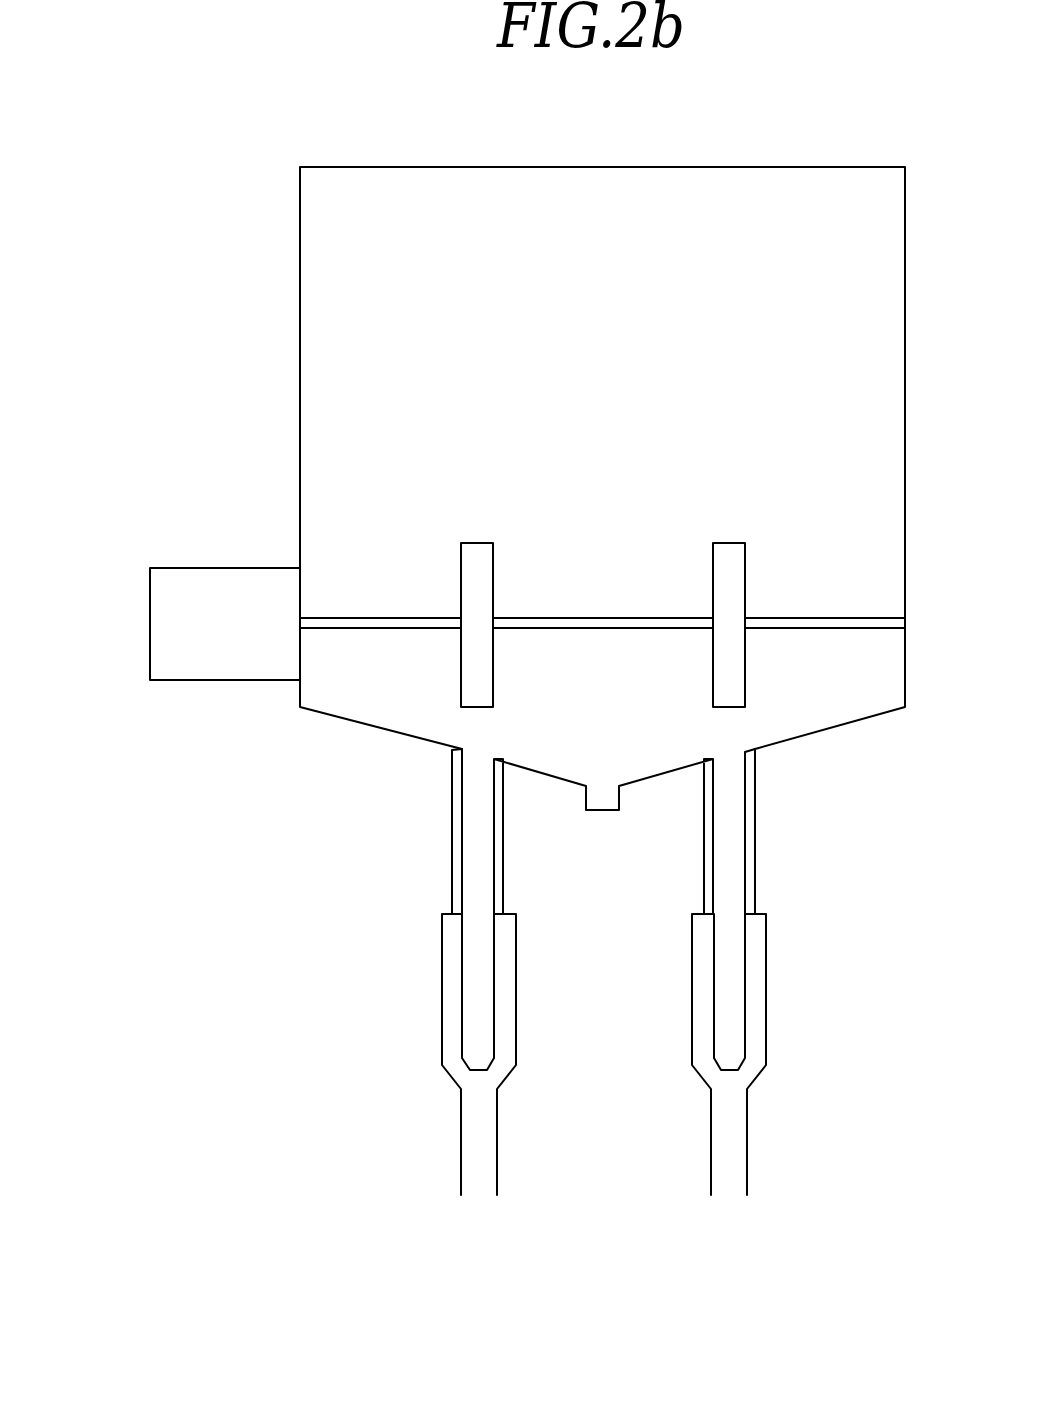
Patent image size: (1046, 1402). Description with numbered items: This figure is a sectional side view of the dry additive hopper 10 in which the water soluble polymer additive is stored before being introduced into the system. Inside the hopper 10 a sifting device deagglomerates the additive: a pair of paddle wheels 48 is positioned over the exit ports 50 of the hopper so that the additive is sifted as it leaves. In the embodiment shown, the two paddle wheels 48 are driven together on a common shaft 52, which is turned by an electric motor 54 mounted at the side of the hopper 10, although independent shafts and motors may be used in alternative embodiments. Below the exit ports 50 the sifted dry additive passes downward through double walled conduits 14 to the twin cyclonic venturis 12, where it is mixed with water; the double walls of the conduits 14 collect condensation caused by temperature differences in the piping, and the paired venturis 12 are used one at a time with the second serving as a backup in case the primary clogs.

The dry additive hopper 10 is at (299, 246).
The cyclonic venturis 12 is at (442, 977).
The double walled conduits 14 is at (503, 852).
The paddle wheels 48 is at (481, 543).
The exit ports 50 is at (477, 765).
The common shaft 52 is at (353, 630).
The electric motor 54 is at (149, 600).